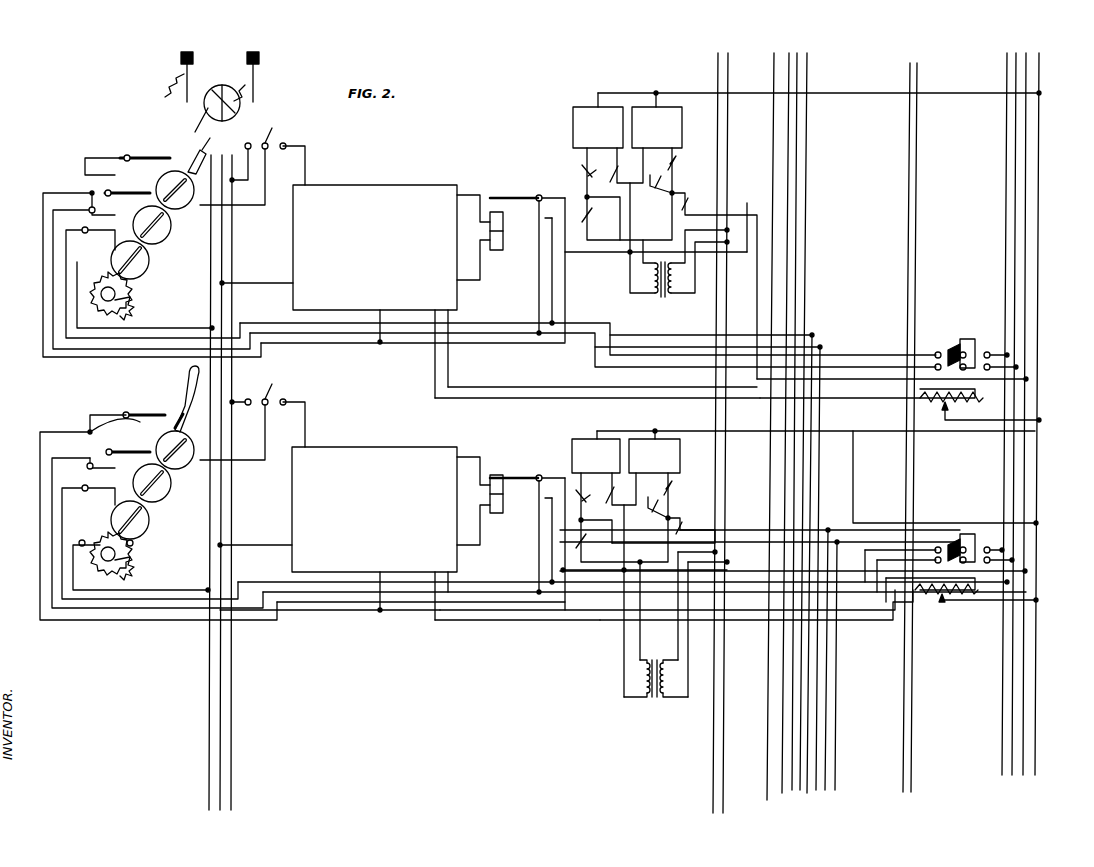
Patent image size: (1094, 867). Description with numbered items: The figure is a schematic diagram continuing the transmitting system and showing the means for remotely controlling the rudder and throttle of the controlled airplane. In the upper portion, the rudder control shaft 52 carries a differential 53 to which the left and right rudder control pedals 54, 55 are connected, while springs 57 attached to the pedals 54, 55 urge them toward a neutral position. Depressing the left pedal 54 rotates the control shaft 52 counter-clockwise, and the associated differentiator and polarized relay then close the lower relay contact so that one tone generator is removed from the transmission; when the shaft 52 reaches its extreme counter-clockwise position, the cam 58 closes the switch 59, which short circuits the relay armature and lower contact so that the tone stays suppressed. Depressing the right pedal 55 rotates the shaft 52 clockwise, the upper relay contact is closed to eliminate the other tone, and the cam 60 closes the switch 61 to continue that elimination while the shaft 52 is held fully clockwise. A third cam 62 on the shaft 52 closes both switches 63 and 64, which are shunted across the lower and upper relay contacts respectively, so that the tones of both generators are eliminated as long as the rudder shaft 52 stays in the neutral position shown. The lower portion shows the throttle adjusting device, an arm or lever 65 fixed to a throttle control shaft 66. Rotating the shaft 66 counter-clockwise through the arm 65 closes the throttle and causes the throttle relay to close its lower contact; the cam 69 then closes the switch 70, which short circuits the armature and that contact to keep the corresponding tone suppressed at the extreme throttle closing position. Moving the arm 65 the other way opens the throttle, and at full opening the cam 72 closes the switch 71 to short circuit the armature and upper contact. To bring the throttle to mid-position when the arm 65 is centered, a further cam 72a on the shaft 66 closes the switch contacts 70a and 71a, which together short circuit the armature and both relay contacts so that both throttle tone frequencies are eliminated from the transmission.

The left rudder control pedal 54 is at (181, 58).
The right rudder control pedal 55 is at (259, 58).
The springs 57 is at (166, 88).
The differential 53 is at (222, 82).
The control shaft 52 is at (190, 150).
The switch 59 is at (146, 146).
The switch 63 is at (126, 186).
The switch 64 is at (105, 218).
The switch 61 is at (102, 232).
The cam 62 is at (162, 232).
The cam 60 is at (148, 266).
The cam 58 is at (181, 190).
The arm or lever 65 is at (185, 388).
The switch 70 is at (138, 408).
The switch contact 70a is at (118, 414).
The throttle control shaft 66 is at (176, 416).
The switch contact 71a is at (105, 474).
The switch 71 is at (98, 490).
The cam 69 is at (180, 450).
The cam 72a is at (155, 496).
The cam 72 is at (147, 524).